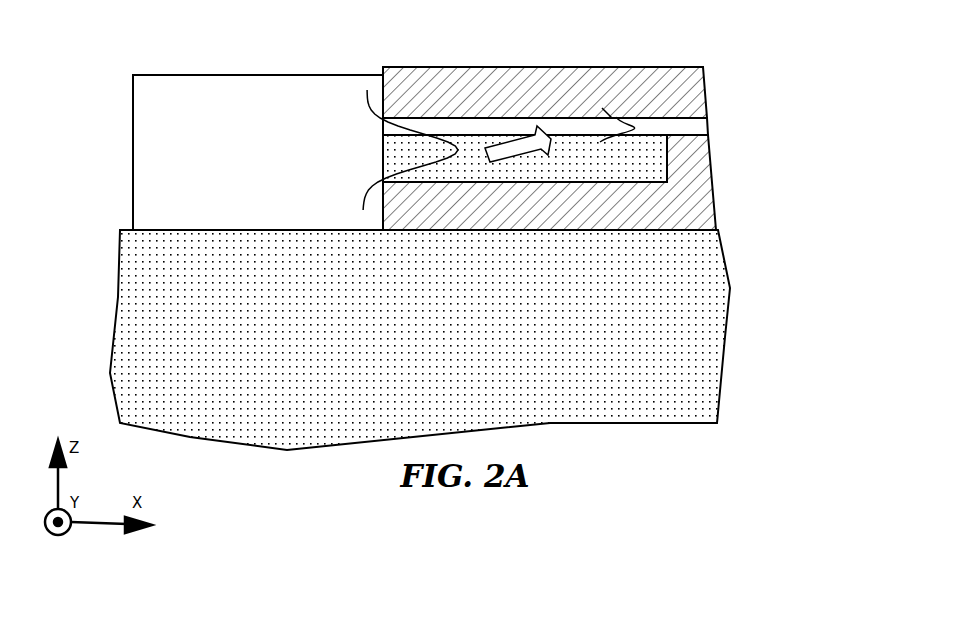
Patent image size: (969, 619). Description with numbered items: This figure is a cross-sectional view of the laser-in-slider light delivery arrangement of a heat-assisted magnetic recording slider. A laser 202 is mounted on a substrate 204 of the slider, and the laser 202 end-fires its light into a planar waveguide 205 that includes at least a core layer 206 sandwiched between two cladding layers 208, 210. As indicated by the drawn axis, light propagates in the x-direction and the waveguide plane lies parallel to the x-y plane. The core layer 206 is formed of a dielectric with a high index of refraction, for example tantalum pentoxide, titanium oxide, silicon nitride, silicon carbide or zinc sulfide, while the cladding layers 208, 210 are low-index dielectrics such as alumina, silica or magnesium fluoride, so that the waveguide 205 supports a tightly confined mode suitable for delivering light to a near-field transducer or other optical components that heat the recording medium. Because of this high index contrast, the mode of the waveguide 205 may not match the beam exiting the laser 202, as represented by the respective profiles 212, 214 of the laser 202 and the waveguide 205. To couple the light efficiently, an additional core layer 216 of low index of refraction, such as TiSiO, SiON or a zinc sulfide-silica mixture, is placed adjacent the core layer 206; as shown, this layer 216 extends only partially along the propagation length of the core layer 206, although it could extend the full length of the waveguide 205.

The laser 202 is at (158, 82).
The substrate 204 is at (128, 312).
The planar waveguide 205 is at (591, 117).
The core layer 206 is at (688, 128).
The cladding layer 208 is at (697, 72).
The cladding layer 210 is at (705, 217).
The beam profile of the laser 212 is at (369, 110).
The mode profile of the waveguide 214 is at (616, 117).
The additional core layer 216 is at (525, 154).